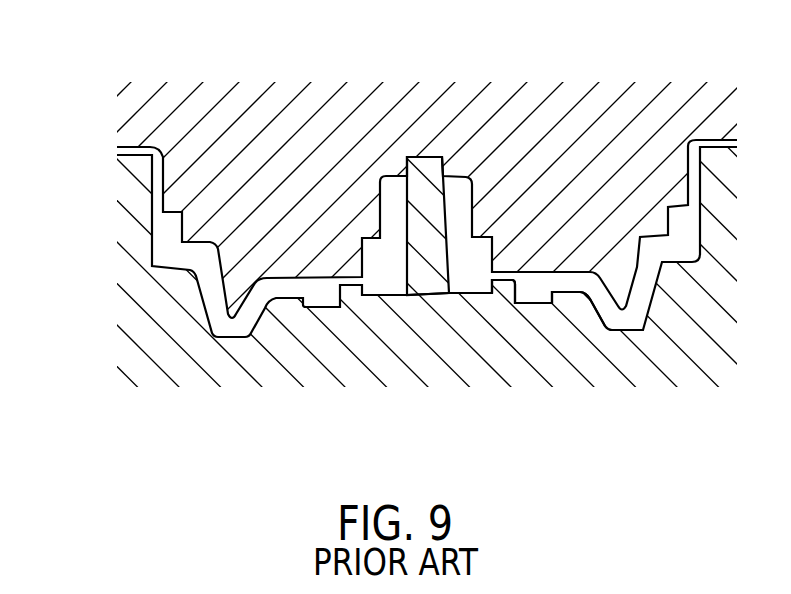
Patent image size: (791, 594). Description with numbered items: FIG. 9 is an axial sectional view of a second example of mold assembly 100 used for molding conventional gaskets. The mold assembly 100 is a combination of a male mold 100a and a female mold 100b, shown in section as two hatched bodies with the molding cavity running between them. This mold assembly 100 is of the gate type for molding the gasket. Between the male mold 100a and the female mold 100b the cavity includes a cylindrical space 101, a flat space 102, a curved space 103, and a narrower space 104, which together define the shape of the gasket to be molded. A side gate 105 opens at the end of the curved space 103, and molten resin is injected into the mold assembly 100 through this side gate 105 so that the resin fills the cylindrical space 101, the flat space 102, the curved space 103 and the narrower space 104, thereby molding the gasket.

The mold assembly 100 is at (395, 251).
The male mold 100a is at (138, 123).
The female mold 100b is at (142, 347).
The cylindrical space 101 is at (462, 190).
The flat space 102 is at (568, 285).
The curved space 103 is at (153, 250).
The narrower space 104 is at (502, 278).
The side gate 105 is at (120, 148).